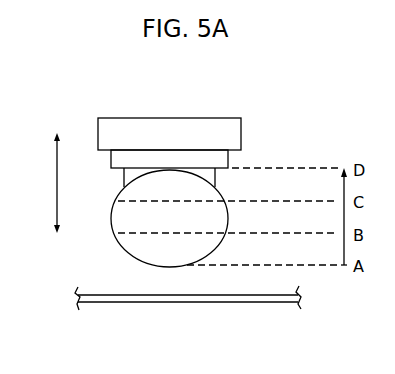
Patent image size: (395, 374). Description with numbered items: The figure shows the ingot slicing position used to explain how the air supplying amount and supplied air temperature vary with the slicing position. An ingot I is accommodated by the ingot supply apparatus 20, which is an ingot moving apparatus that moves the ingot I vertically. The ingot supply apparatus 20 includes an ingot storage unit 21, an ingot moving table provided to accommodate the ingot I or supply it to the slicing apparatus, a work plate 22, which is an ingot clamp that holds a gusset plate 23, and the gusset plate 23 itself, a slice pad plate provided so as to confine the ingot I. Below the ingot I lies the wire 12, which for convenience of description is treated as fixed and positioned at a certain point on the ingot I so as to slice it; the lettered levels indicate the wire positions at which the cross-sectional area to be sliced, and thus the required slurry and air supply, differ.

The ingot supply apparatus 20 is at (216, 139).
The ingot storage unit 21 is at (228, 137).
The work plate 22 is at (228, 161).
The gusset plate 23 is at (208, 165).
The ingot I is at (134, 257).
The wire 12 is at (243, 302).